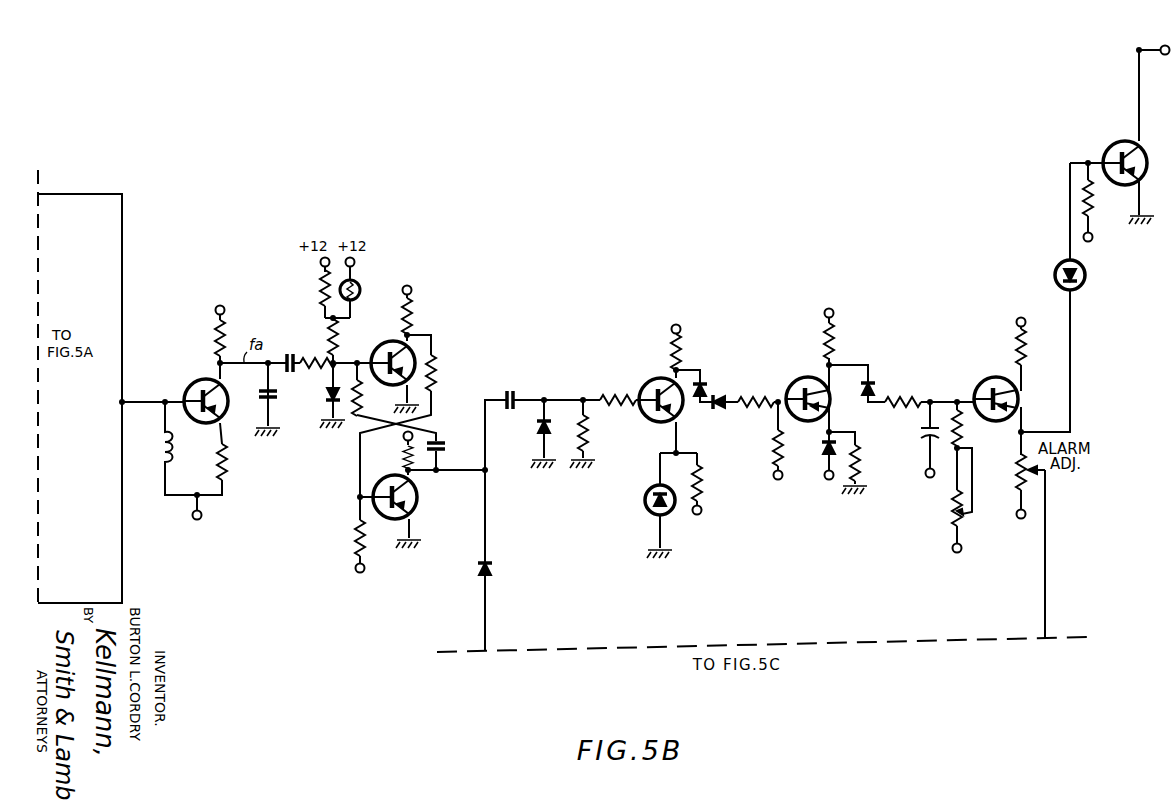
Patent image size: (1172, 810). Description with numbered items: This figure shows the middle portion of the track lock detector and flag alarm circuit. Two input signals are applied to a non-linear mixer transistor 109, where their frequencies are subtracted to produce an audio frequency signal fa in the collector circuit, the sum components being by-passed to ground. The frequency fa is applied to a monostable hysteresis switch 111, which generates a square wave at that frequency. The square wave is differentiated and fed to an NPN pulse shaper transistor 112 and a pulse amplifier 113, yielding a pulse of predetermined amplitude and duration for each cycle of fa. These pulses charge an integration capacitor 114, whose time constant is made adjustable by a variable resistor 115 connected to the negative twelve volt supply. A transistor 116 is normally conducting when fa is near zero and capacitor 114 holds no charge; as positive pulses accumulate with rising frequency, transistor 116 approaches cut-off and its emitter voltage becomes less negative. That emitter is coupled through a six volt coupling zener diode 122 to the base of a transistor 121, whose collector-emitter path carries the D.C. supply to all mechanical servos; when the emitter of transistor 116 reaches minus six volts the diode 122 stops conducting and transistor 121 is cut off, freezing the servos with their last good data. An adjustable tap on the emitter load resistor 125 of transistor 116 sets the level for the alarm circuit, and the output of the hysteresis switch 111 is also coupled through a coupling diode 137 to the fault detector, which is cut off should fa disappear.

The non-linear mixer transistor 109 is at (195, 382).
The monostable hysteresis switch 111 is at (388, 405).
The NPN pulse shaper transistor 112 is at (660, 378).
The pulse amplifier 113 is at (791, 383).
The integration capacitor 114 is at (921, 434).
The variable resistor 115 is at (956, 522).
The transistor 116 is at (976, 388).
The transistor 121 is at (1101, 146).
The coupling zener diode 122 is at (1055, 270).
The emitter load resistor 125 is at (1012, 474).
The coupling diode 137 is at (500, 572).